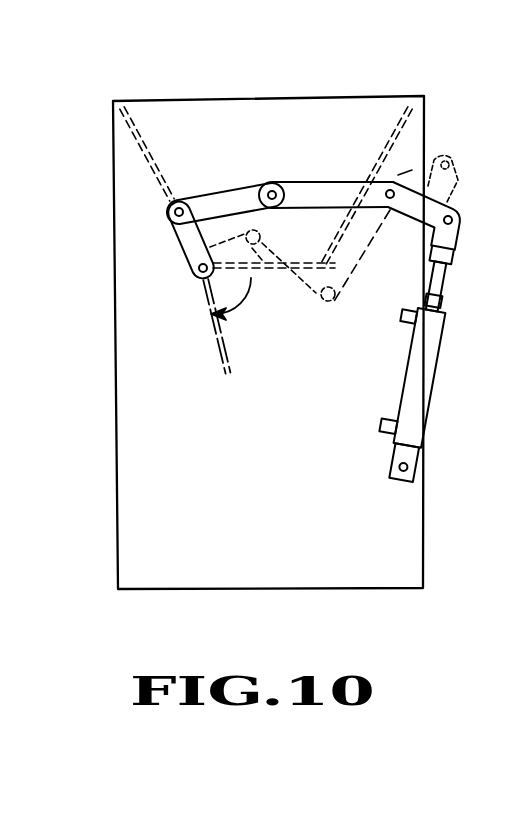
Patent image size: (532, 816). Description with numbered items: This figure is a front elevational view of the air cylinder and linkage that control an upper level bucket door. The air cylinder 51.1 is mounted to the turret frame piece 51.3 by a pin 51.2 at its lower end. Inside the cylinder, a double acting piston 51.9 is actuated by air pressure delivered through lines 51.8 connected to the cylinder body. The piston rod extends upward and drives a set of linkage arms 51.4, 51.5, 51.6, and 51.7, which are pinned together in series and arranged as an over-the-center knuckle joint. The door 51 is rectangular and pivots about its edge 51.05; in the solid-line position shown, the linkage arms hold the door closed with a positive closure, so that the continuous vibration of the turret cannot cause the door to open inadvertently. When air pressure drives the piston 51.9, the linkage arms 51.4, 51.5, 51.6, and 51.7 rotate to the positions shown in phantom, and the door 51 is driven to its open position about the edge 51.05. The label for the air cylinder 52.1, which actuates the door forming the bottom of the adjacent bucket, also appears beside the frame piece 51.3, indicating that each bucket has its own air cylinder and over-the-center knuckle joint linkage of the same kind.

The door 51 is at (232, 371).
The edge 51.05 is at (194, 278).
The air cylinder 51.1 is at (434, 376).
The pin 51.2 is at (416, 470).
The frame piece 51.3 is at (417, 565).
The linkage arm 51.4 is at (433, 199).
The linkage arm 51.5 is at (322, 182).
The linkage arm 51.6 is at (224, 191).
The linkage arm 51.7 is at (183, 248).
The lines 51.8 is at (402, 318).
The double acting piston 51.9 is at (443, 286).
The air cylinder 52.1 is at (509, 430).